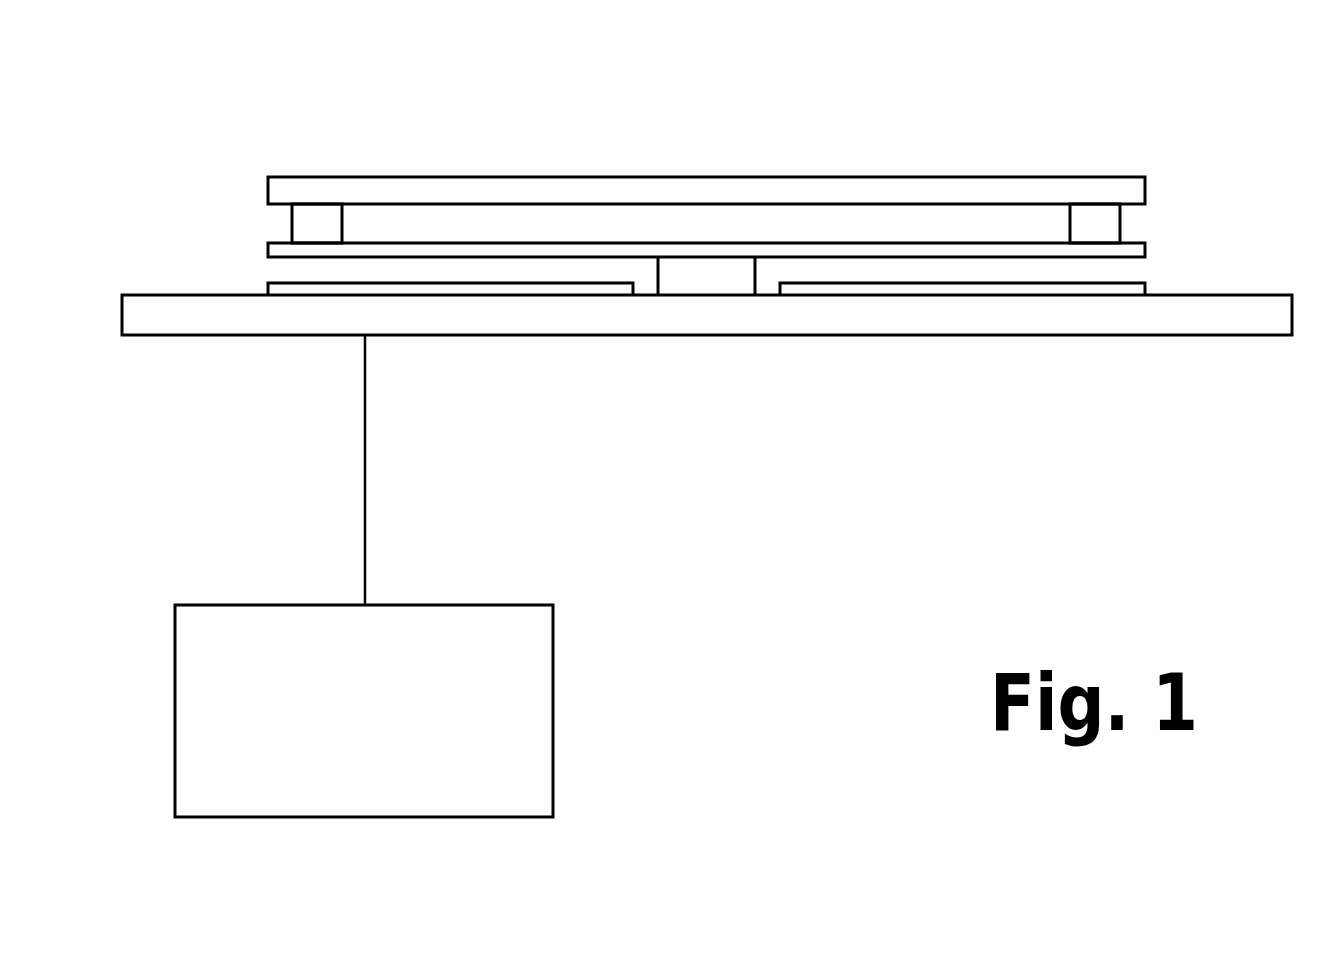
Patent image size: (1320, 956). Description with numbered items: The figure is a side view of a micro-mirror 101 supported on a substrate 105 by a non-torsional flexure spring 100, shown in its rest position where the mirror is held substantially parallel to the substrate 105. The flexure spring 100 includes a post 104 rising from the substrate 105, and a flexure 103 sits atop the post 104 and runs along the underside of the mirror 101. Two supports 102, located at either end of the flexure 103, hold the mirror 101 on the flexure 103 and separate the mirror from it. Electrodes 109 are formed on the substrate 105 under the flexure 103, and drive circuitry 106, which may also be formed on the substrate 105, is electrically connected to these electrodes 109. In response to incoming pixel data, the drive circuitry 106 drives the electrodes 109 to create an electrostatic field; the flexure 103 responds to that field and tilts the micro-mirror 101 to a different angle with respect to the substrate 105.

The flexure spring 100 is at (238, 257).
The micro-mirror 101 is at (426, 177).
The supports 102 is at (292, 223).
The flexure 103 is at (1145, 250).
The post 104 is at (682, 283).
The substrate 105 is at (873, 318).
The drive circuitry 106 is at (364, 576).
The electrodes 109 is at (537, 288).